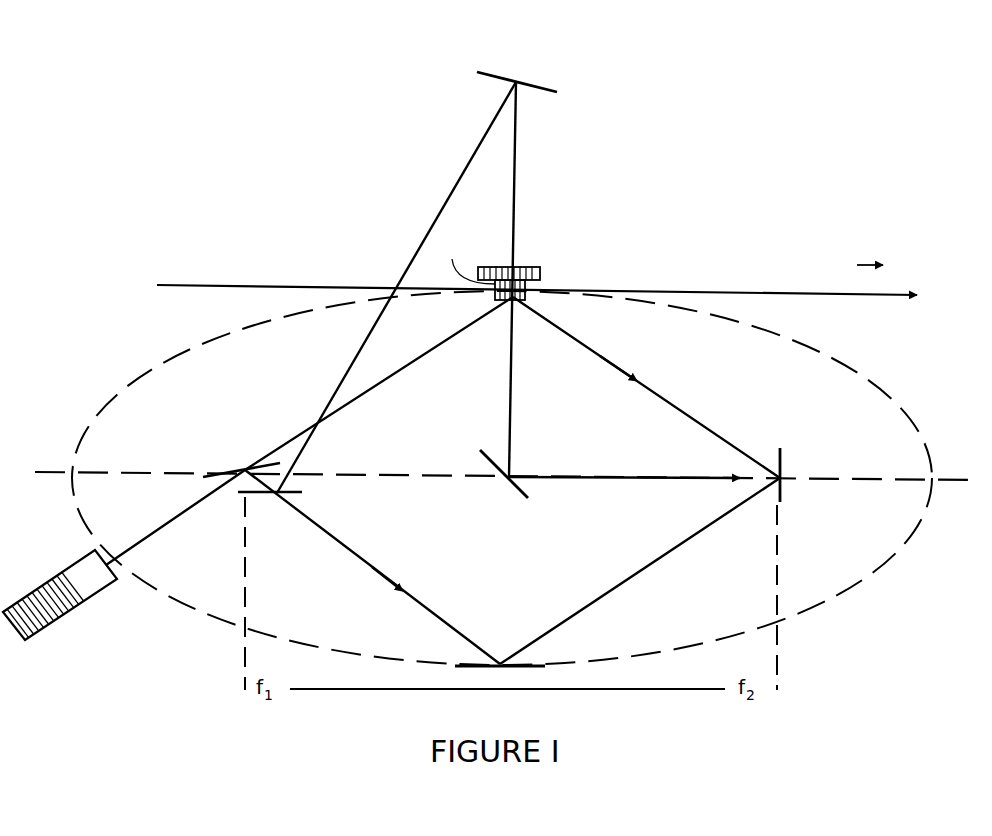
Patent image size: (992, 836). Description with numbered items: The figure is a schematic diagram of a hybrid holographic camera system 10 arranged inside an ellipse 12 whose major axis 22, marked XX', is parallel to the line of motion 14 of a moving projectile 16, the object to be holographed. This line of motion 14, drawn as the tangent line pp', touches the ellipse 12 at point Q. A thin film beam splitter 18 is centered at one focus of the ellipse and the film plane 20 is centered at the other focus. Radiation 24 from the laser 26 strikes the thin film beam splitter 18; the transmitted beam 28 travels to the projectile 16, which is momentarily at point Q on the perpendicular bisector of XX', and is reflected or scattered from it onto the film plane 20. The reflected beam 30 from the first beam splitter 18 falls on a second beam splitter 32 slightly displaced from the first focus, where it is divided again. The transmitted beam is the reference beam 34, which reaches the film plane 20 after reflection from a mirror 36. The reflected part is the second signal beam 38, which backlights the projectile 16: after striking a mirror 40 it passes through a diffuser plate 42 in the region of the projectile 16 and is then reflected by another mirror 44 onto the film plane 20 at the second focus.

The hybrid holographic camera system 10 is at (295, 128).
The ellipse 12 is at (155, 365).
The line of motion 14 is at (825, 298).
The projectile 16 is at (517, 300).
The thin film beam splitter 18 is at (236, 466).
The film plane 20 is at (785, 462).
The major axis 22 is at (155, 472).
The radiation 24 is at (160, 528).
The laser 26 is at (42, 630).
The transmitted beam 28 is at (440, 333).
The reflected beam 30 is at (250, 478).
The beam splitter 32 is at (298, 490).
The reference beam 34 is at (425, 605).
The mirror 36 is at (483, 668).
The second signal beam 38 is at (517, 170).
The mirror 40 is at (497, 75).
The diffuser plate 42 is at (520, 268).
The mirror 44 is at (515, 487).